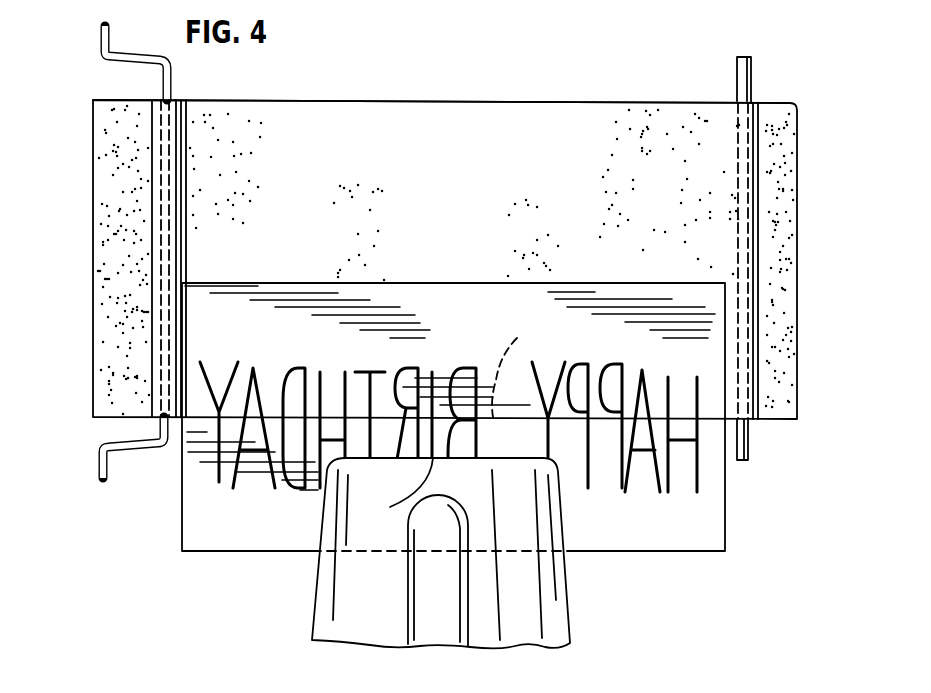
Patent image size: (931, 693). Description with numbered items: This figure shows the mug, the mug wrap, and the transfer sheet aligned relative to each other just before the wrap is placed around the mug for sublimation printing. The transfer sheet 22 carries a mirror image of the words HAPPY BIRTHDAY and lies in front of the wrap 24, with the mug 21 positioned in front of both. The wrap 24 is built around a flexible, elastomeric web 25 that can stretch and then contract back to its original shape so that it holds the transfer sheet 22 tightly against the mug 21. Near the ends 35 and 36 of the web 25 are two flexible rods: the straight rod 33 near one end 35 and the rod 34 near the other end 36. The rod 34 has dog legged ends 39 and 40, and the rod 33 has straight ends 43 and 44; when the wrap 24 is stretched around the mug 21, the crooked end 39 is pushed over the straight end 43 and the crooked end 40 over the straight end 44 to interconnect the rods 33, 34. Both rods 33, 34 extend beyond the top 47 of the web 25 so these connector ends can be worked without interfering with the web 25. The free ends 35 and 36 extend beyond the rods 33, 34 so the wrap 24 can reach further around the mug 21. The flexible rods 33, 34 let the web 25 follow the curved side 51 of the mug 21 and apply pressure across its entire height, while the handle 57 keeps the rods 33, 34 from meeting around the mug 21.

The mug 21 is at (557, 620).
The transfer sheet 22 is at (703, 533).
The wrap 24 is at (552, 133).
The elastomeric web 25 is at (377, 153).
The straight rod 33 is at (736, 91).
The flexible rod 34 is at (172, 78).
The end of the web 35 is at (787, 163).
The end of the web 36 is at (112, 268).
The dog legged end 39 is at (97, 468).
The dog legged end 40 is at (100, 32).
The straight end 43 is at (742, 462).
The straight end 44 is at (750, 76).
The top of the elastomeric web 47 is at (482, 102).
The curved side 51 is at (315, 585).
The handle 57 is at (437, 617).